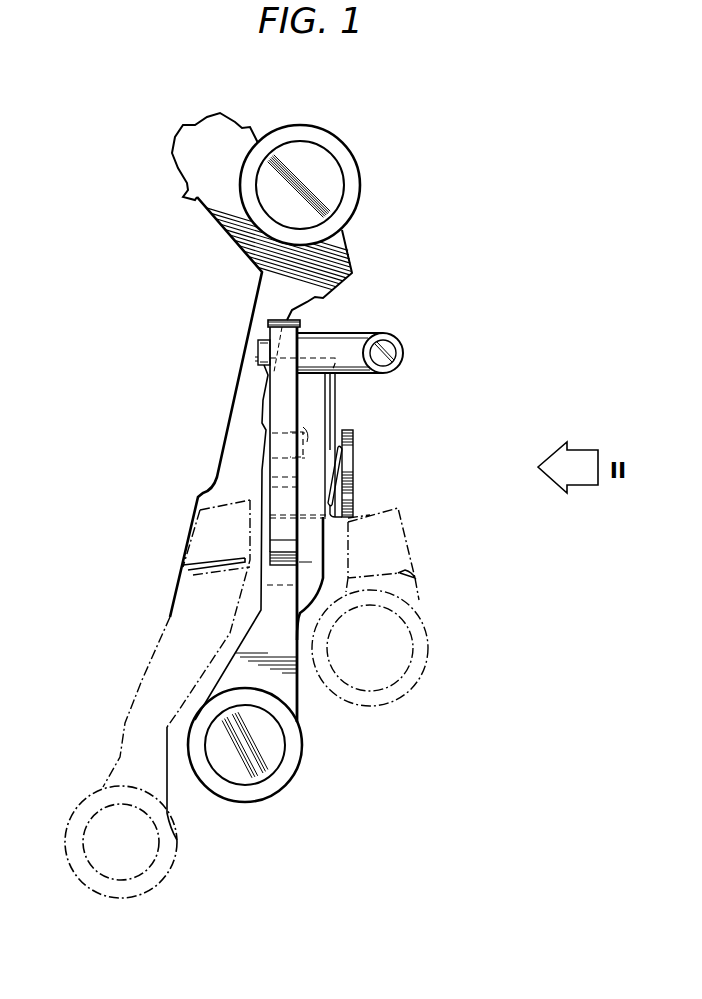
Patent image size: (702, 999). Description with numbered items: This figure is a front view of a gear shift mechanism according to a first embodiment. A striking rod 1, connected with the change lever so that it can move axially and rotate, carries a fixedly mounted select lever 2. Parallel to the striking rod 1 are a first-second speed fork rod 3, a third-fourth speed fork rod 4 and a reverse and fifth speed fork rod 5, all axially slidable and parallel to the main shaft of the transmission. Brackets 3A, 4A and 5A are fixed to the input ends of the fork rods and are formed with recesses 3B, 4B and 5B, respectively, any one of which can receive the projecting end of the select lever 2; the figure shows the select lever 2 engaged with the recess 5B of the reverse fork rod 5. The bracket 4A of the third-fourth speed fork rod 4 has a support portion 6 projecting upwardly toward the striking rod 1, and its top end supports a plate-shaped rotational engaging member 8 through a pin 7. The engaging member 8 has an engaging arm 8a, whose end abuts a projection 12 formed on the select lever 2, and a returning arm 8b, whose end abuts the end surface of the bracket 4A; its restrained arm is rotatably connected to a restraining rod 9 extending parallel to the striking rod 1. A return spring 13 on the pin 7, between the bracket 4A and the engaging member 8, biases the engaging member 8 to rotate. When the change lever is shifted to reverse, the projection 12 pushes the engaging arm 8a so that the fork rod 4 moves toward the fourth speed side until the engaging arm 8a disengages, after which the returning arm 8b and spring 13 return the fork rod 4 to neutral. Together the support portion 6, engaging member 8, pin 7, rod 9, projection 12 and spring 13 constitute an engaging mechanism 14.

The striking rod 1 is at (310, 155).
The select lever 2 is at (228, 435).
The first-second speed fork rod 3 is at (400, 662).
The bracket 3A is at (413, 562).
The recess 3B is at (413, 582).
The third-fourth speed fork rod 4 is at (273, 752).
The bracket 4A is at (298, 702).
The recess 4B is at (281, 586).
The reverse and fifth speed fork rod 5 is at (98, 832).
The bracket 5A is at (148, 662).
The recess 5B is at (187, 563).
The support portion 6 is at (313, 562).
The pin 7 is at (356, 482).
The rotational engaging member 8 is at (263, 385).
The engaging arm 8a is at (277, 477).
The returning arm 8b is at (278, 540).
The restraining rod 9 is at (353, 333).
The projection 12 is at (312, 426).
The return spring 13 is at (337, 397).
The engaging mechanism 14 is at (412, 367).